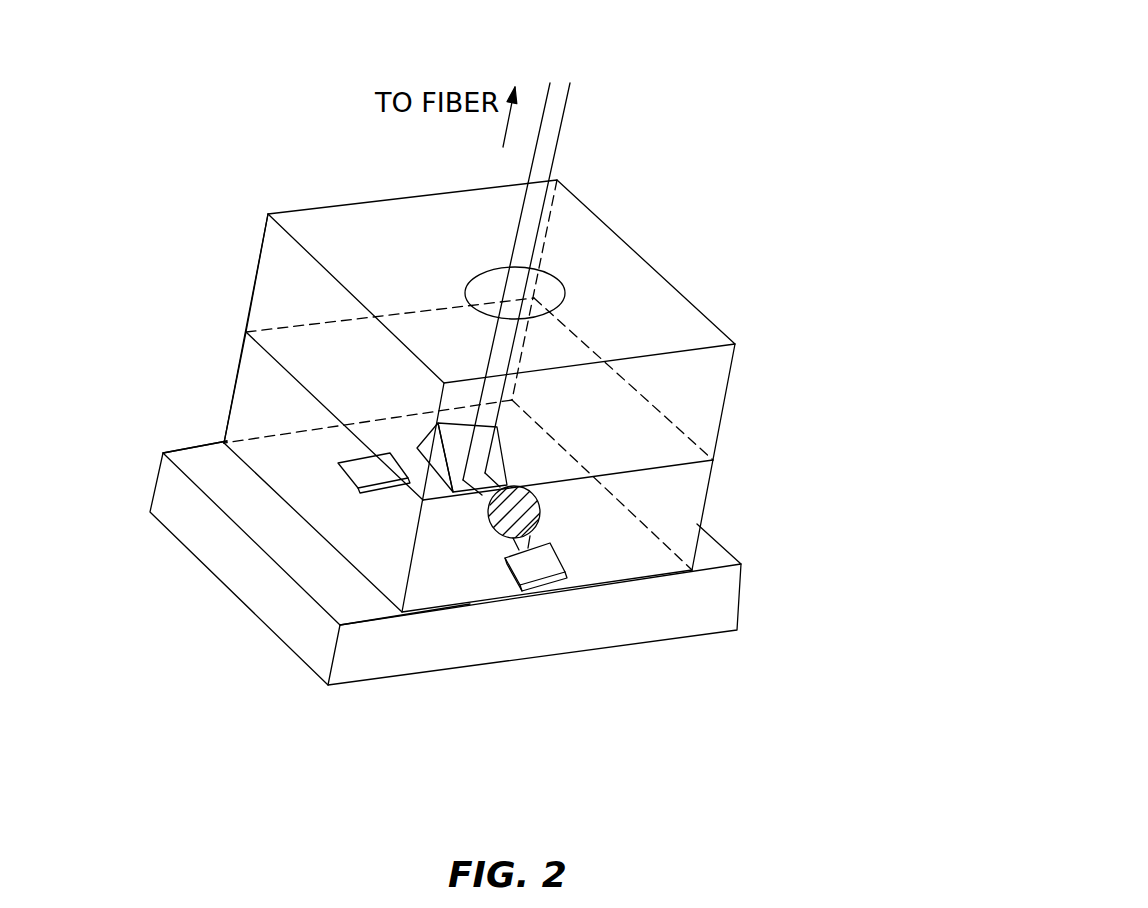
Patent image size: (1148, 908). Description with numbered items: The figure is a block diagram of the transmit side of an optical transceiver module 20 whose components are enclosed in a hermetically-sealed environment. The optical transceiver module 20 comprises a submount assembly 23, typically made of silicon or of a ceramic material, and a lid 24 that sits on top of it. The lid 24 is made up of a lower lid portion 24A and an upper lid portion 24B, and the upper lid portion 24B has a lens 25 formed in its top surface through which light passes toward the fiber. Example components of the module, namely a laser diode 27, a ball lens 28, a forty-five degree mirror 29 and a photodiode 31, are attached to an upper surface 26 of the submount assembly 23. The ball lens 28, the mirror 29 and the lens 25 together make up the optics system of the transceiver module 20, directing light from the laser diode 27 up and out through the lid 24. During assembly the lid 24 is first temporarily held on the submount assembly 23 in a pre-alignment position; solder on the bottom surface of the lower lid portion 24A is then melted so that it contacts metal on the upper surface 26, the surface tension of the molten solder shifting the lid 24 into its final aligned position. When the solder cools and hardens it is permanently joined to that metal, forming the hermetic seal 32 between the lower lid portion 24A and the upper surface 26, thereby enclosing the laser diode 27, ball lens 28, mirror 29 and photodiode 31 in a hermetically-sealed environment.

The optical transceiver module 20 is at (776, 92).
The submount assembly 23 is at (317, 637).
The lid 24 is at (735, 345).
The lower lid portion 24A is at (257, 385).
The upper lid portion 24B is at (283, 293).
The lens 25 is at (485, 270).
The upper surface of the submount assembly 26 is at (215, 463).
The laser diode 27 is at (565, 573).
The ball lens 28 is at (540, 510).
The 45° mirror 29 is at (458, 432).
The photodiode 31 is at (338, 462).
The hermetic seal 32 is at (345, 560).